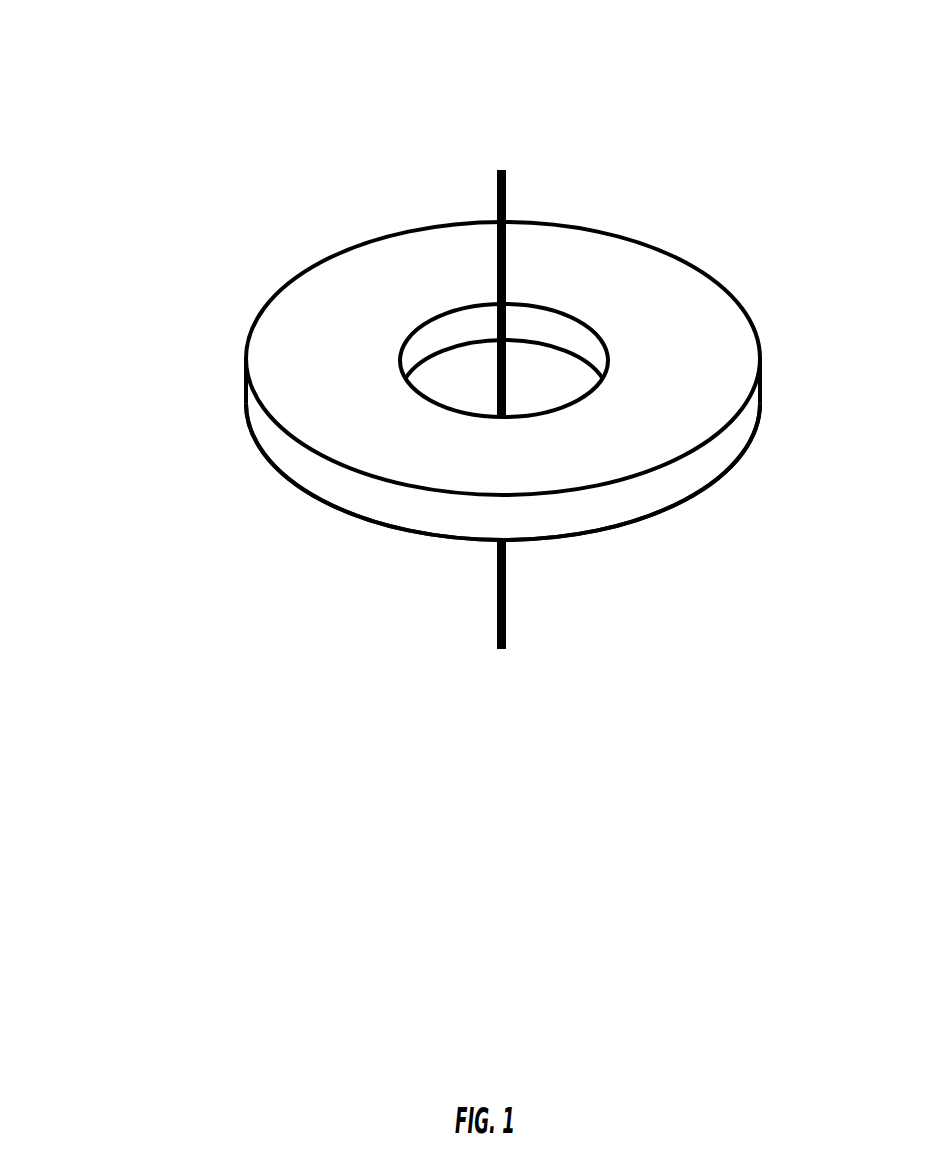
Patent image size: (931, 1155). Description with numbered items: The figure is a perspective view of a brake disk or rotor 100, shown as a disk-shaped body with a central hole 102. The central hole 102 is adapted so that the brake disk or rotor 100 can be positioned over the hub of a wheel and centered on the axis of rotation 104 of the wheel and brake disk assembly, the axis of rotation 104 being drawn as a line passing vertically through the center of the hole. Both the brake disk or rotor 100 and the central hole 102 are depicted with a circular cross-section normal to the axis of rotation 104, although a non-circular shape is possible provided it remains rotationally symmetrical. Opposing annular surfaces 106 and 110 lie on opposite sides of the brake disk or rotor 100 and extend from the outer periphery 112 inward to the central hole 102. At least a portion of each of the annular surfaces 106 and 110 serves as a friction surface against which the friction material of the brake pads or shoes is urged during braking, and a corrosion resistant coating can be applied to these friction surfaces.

The brake disk or rotor 100 is at (142, 102).
The central hole 102 is at (452, 368).
The axis of rotation 104 is at (502, 208).
The annular surface 106 is at (287, 358).
The annular surface 110 is at (458, 499).
The outer periphery 112 is at (718, 458).